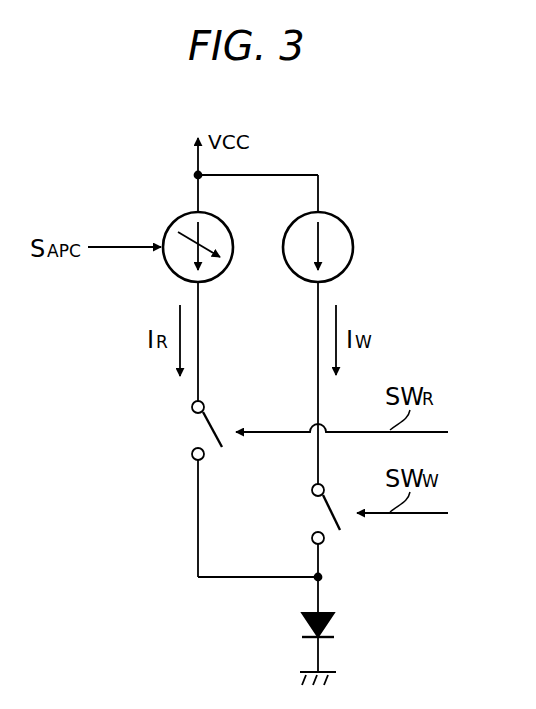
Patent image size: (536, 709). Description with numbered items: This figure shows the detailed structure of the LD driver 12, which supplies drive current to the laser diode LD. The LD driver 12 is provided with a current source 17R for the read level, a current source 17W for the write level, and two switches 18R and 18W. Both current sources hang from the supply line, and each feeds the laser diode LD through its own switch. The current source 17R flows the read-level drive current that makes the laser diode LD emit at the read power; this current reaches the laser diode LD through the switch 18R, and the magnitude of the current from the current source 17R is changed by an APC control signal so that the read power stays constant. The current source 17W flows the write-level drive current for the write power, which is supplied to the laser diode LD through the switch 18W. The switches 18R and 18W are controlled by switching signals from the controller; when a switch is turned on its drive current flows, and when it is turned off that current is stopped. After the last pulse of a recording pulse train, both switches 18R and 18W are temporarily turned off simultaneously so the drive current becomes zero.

The LD driver 12 is at (352, 150).
The current source for the read level 17R is at (174, 222).
The current source for the write level 17W is at (353, 249).
The switch 18R is at (200, 431).
The switch 18W is at (320, 513).
The laser diode LD is at (335, 630).